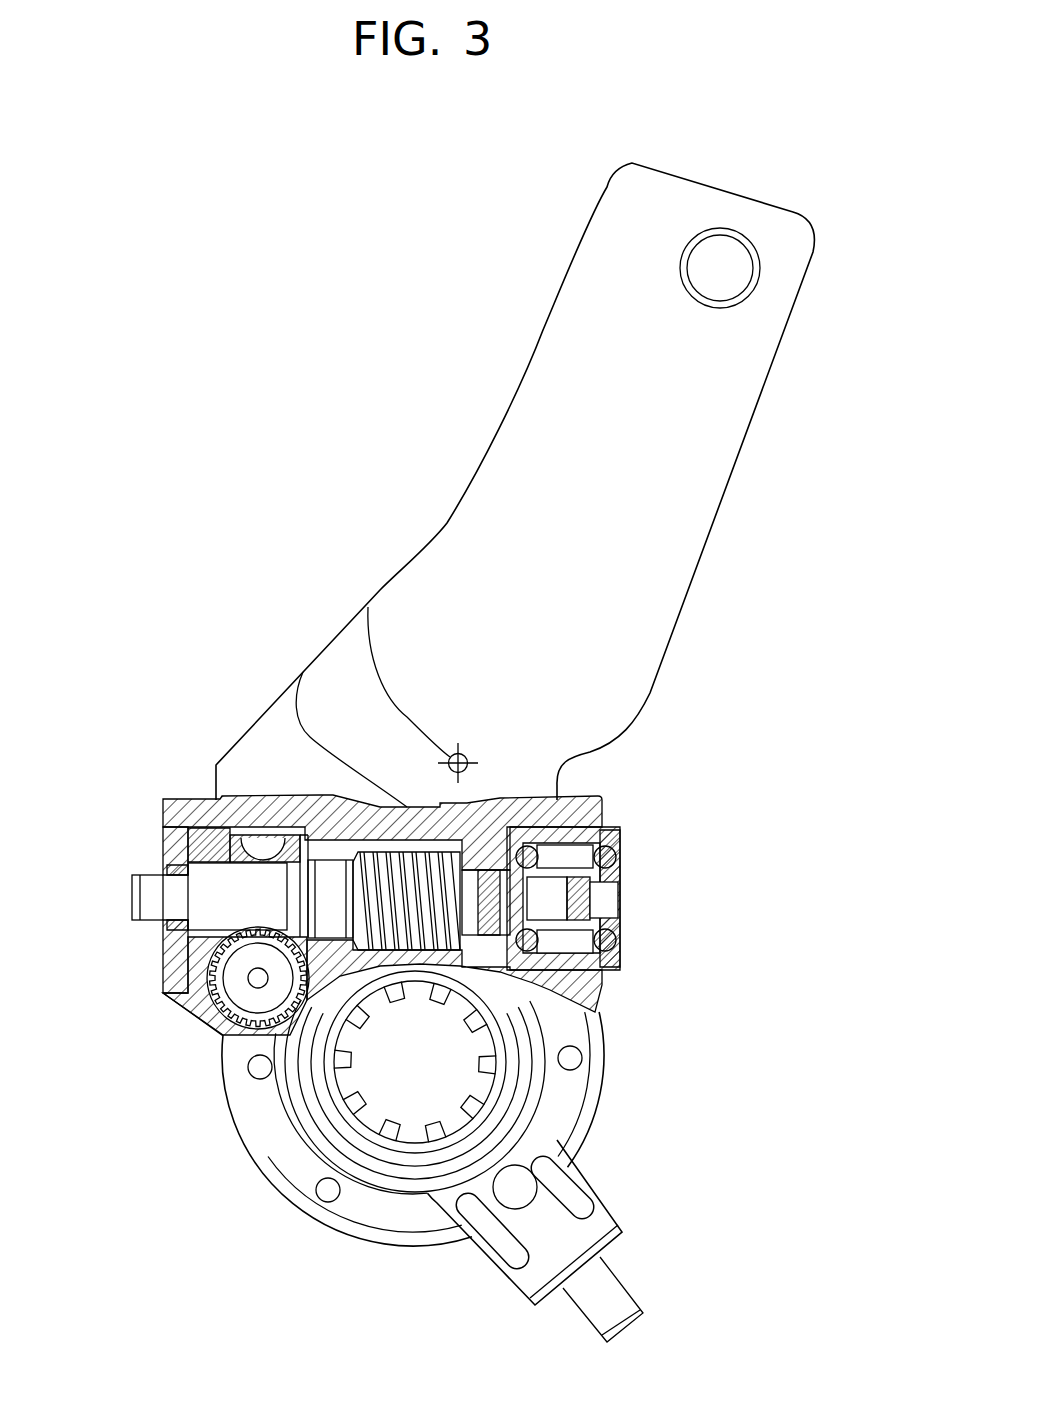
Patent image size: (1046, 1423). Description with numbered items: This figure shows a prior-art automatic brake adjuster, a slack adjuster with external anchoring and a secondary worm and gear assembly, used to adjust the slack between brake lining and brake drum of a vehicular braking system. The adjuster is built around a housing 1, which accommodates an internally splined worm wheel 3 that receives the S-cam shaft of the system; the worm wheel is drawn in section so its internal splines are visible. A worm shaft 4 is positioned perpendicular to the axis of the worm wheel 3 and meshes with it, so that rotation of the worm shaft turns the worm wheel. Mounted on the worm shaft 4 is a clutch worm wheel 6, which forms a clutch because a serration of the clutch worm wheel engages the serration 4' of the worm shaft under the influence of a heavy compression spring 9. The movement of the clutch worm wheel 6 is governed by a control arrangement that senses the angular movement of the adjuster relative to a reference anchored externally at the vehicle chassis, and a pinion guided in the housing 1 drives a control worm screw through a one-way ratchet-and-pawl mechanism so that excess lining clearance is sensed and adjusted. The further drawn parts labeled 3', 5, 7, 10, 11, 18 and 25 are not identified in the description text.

The housing 1 is at (582, 363).
The worm wheel 3 is at (409, 1156).
The internal splines of worm wheel 3' is at (494, 1086).
The worm shaft 4 is at (301, 845).
The serration of the worm shaft 4' is at (119, 868).
The housing 5 is at (182, 968).
The clutch worm wheel 6 is at (254, 845).
The gear 7 is at (218, 943).
The heavy compression spring 9 is at (610, 845).
The bearing carrier 10 is at (517, 842).
The shaft end 11 is at (604, 897).
The hole 18 is at (325, 1193).
The bearing 25 is at (182, 925).